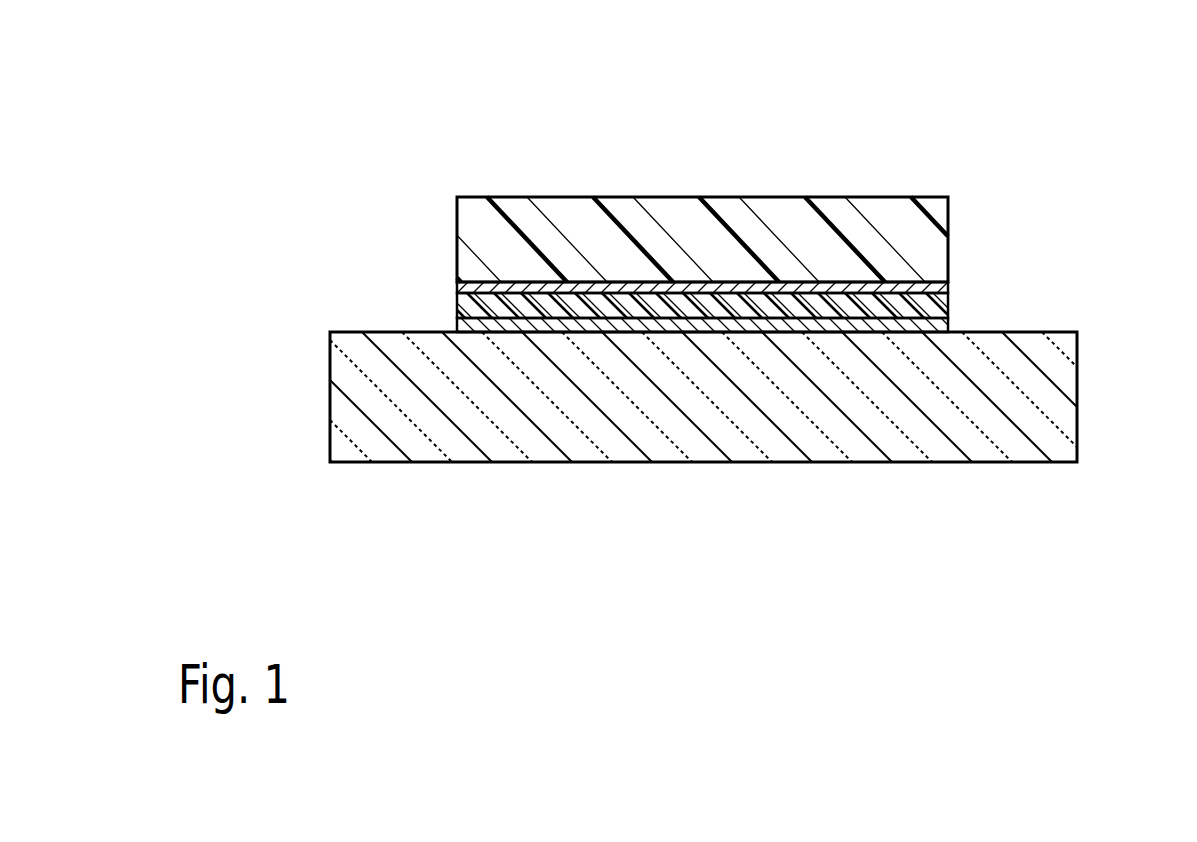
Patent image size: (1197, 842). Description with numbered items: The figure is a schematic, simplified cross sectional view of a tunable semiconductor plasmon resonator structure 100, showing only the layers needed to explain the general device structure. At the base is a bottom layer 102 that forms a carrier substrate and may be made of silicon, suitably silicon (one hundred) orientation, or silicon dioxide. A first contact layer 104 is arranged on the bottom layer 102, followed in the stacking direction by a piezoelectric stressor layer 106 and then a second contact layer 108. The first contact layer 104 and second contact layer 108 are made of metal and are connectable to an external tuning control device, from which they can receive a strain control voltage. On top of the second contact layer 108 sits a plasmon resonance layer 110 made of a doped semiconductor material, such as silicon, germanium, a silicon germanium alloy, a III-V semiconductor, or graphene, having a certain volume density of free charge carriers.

The tunable semiconductor plasmon resonator structure 100 is at (408, 114).
The bottom layer 102 is at (1062, 383).
The first contact layer 104 is at (950, 325).
The piezoelectric stressor layer 106 is at (962, 301).
The second contact layer 108 is at (948, 285).
The plasmon resonance layer 110 is at (750, 232).